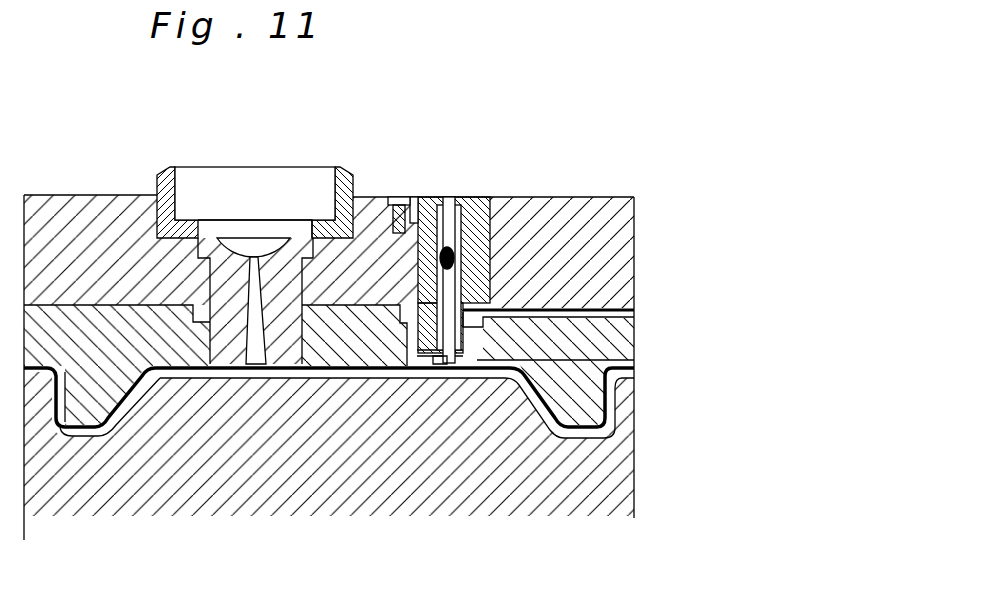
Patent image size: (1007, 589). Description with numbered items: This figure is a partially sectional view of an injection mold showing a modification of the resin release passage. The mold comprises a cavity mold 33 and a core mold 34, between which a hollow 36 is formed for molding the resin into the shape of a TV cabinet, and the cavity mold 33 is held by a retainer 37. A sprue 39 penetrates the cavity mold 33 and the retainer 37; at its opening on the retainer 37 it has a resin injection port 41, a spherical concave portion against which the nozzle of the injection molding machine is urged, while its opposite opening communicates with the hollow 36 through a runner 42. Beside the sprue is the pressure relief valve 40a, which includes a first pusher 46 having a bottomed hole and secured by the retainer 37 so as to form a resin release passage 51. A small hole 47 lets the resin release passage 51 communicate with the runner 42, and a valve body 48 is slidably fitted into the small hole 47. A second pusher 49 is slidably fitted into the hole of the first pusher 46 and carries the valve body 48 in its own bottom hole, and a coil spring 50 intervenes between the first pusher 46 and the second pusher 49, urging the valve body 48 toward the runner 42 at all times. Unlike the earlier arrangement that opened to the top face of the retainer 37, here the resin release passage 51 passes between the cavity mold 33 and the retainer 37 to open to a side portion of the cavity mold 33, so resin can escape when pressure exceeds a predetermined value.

The cavity mold 33 is at (603, 348).
The core mold 34 is at (617, 460).
The hollow 36 is at (607, 403).
The retainer 37 is at (607, 248).
The sprue 39 is at (248, 285).
The pressure relief valve 40a is at (450, 183).
The resin injection port 41 is at (247, 257).
The runner 42 is at (233, 297).
The first pusher 46 is at (428, 205).
The small hole 47 is at (483, 360).
The valve body 48 is at (460, 252).
The second pusher 49 is at (436, 215).
The coil spring 50 is at (540, 225).
The resin release passage 51 is at (625, 320).